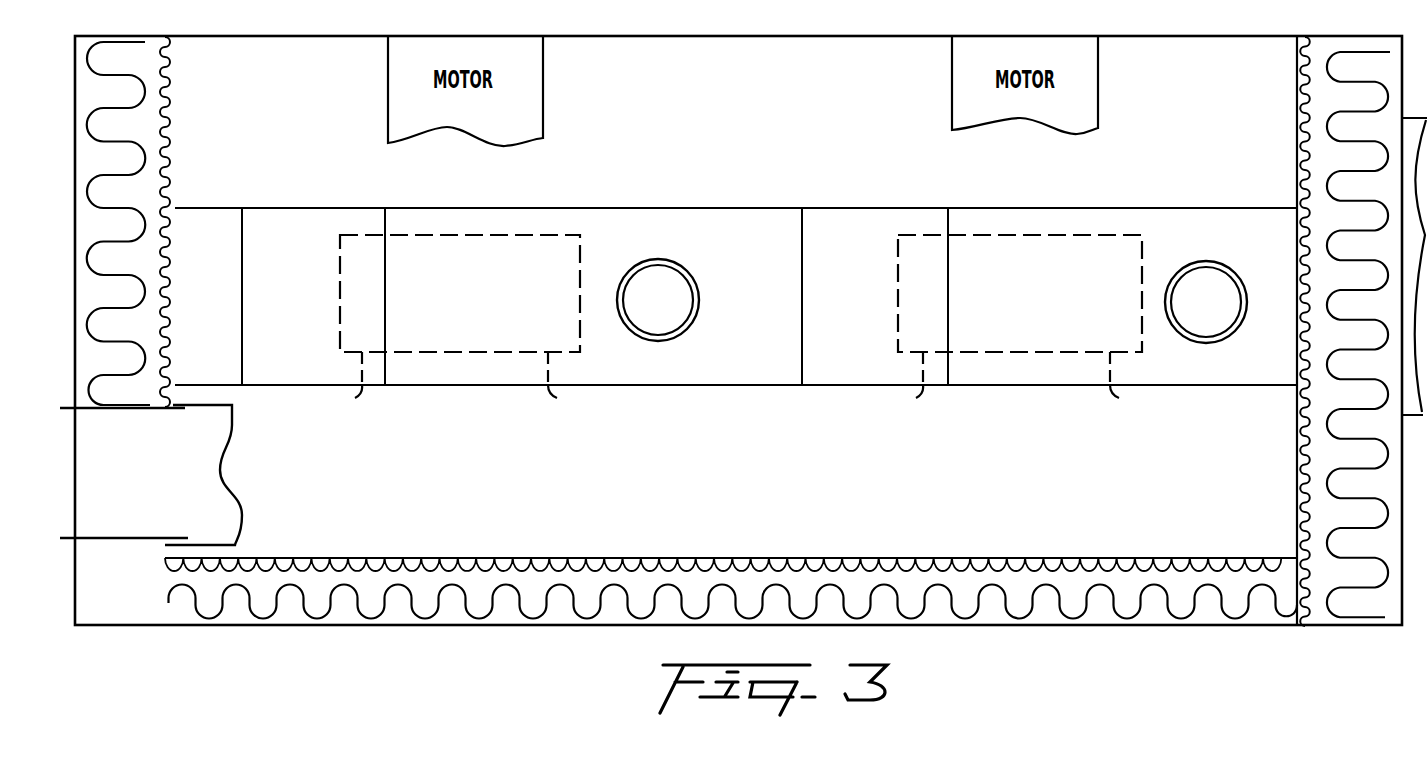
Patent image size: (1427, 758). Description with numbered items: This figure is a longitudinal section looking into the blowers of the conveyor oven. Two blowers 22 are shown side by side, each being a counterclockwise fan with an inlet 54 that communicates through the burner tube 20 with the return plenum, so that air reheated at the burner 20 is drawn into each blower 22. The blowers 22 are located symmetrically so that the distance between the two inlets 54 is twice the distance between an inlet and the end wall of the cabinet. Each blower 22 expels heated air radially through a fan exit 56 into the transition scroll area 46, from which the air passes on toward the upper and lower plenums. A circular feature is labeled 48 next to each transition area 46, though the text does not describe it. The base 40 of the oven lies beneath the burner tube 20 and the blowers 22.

The burner 20 is at (283, 505).
The blower 22 is at (550, 250).
The base 40 is at (1107, 612).
The transition scroll area 46 is at (655, 241).
The exhaust pipe 48 is at (945, 278).
The inlet 54 is at (482, 380).
The fan exit 56 is at (304, 208).